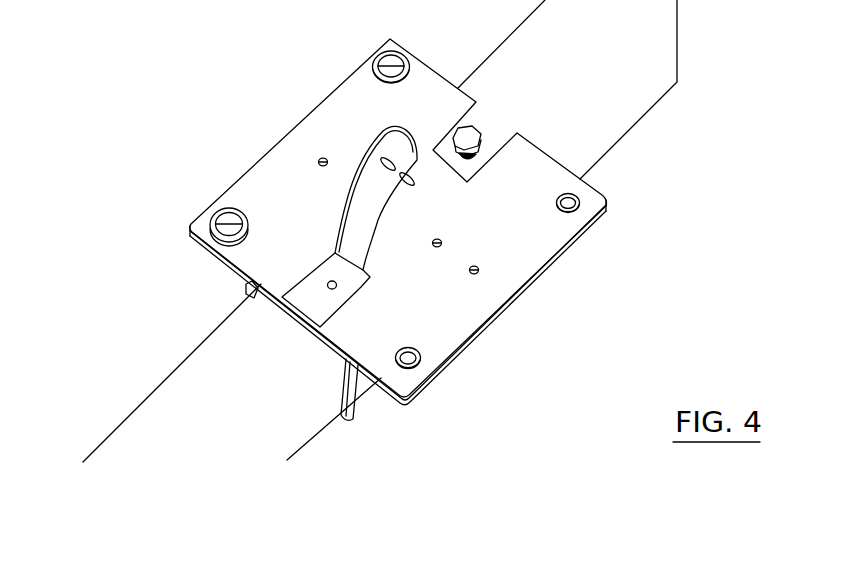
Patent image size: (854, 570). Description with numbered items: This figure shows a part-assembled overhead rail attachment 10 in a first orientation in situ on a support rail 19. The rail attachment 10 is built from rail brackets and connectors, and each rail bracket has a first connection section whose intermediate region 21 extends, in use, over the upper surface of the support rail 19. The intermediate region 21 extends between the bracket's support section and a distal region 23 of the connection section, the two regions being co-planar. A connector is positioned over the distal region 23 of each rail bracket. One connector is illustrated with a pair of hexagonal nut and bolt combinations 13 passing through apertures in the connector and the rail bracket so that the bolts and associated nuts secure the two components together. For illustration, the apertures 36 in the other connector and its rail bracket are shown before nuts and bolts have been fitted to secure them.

The overhead rail attachment 10 is at (687, 138).
The hexagonal nut and bolt combination 13 is at (380, 70).
The support rail 19 is at (678, 32).
The intermediate region 21 is at (483, 131).
The distal region 23 is at (508, 312).
The aperture 36 is at (577, 210).